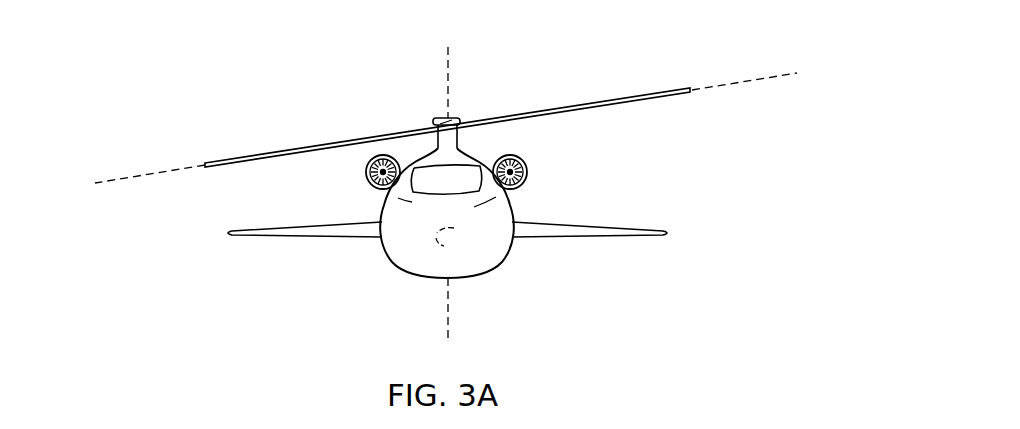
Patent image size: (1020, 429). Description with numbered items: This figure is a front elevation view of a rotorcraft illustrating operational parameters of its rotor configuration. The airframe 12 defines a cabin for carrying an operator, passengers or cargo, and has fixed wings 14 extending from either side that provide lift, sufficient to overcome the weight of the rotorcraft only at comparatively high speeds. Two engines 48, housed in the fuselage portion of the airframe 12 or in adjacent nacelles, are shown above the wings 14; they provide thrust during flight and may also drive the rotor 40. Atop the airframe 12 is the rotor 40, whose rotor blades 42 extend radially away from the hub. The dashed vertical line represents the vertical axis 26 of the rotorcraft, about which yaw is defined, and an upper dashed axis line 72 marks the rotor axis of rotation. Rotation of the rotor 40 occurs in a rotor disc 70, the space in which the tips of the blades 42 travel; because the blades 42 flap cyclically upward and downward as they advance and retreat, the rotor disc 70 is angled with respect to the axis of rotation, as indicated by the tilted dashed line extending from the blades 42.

The airframe 12 is at (410, 256).
The fixed wings 14 is at (313, 233).
The vertical axis 26 is at (448, 322).
The rotor 40 is at (400, 112).
The rotor blades 42 is at (267, 150).
The engines 48 is at (366, 173).
The rotor disc 70 is at (737, 82).
The rotor axis 72 is at (450, 63).